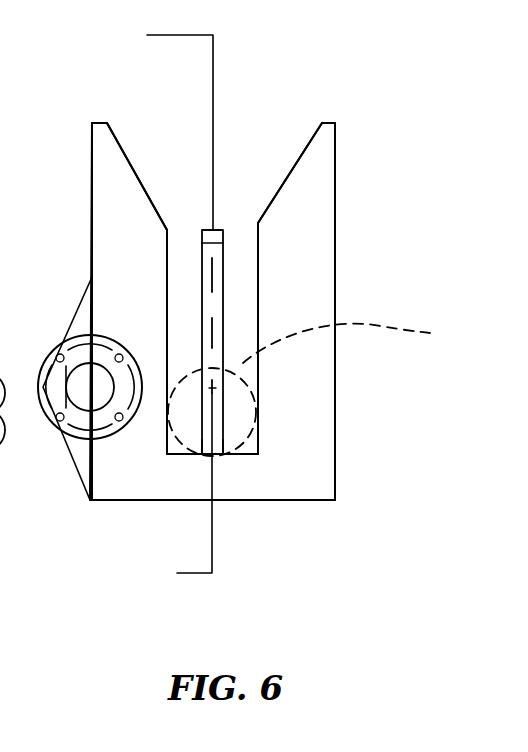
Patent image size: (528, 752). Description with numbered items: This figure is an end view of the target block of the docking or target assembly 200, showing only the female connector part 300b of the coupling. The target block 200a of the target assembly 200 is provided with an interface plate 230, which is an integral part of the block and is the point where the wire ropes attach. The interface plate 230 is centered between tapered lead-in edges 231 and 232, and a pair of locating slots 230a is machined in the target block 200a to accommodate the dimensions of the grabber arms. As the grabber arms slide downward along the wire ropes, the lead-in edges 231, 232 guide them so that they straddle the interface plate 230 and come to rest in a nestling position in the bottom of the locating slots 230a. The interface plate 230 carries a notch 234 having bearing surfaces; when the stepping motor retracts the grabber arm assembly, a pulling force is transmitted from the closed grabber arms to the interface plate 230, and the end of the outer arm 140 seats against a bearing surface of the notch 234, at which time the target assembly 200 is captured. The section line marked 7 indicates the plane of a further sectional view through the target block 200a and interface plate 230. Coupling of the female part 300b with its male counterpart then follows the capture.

The target assembly 200 is at (414, 263).
The target block 200a is at (297, 492).
The interface plate 230 is at (200, 255).
The locating slots 230a is at (180, 430).
The tapered lead-in edge 231 is at (312, 145).
The tapered lead-in edge 232 is at (110, 127).
The notch 234 is at (213, 390).
The outer arm 140 is at (328, 390).
The female connector part 300b is at (65, 383).
The section line 7- 7 is at (170, 305).